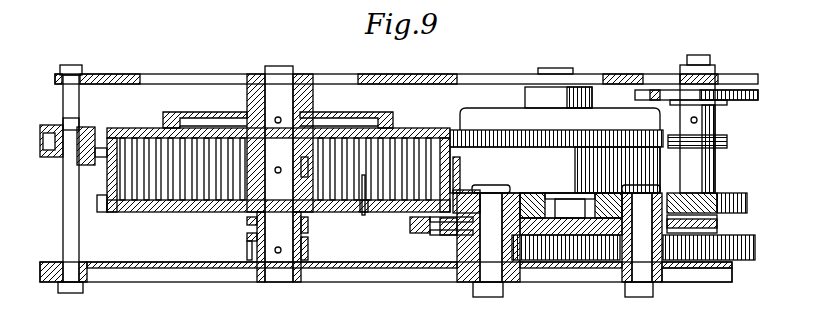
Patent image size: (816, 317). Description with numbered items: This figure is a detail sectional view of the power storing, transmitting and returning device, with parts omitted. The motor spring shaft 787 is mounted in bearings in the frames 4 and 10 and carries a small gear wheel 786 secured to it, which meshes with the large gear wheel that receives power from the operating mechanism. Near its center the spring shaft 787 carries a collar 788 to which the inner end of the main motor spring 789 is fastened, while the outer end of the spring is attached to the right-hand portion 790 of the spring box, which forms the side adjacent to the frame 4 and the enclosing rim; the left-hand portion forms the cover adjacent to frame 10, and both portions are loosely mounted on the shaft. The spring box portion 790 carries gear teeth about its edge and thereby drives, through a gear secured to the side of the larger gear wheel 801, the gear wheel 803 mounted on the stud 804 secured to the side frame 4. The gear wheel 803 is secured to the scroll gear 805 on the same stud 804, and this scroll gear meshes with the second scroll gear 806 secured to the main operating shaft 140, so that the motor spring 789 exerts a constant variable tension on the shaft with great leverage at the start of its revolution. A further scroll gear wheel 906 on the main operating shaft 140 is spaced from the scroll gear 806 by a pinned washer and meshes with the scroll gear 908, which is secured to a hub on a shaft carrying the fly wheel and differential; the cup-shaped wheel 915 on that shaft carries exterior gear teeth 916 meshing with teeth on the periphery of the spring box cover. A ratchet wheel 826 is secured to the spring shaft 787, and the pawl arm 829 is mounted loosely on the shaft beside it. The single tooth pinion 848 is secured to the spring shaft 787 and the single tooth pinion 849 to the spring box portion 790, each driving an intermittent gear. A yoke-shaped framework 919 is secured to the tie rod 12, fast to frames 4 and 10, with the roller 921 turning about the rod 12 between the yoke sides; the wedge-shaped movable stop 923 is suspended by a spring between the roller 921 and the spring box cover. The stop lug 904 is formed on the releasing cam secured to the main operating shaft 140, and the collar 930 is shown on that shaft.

The frame 4 is at (410, 268).
The frame 10 is at (430, 84).
The tie rod 12 is at (64, 231).
The main operating shaft 140 is at (714, 174).
The small gear wheel 786 is at (308, 245).
The motor spring shaft 787 is at (283, 278).
The collar 788 is at (308, 182).
The motor spring 789 is at (364, 215).
The right-hand portion of spring box 790 is at (366, 205).
The larger gear wheel 801 is at (414, 236).
The gear wheel 803 is at (707, 229).
The stud 804 is at (640, 276).
The scroll gear 805 is at (700, 201).
The scroll gear 806 is at (713, 219).
The ratchet wheel 826 is at (200, 120).
The pawl arm 829 is at (303, 113).
The single tooth pinion 848 is at (247, 237).
The single tooth pinion 849 is at (247, 224).
The stop lug 904 is at (660, 95).
The scroll gear wheel 906 is at (728, 266).
The scroll gear 908 is at (518, 258).
The cup-shaped wheel 915 is at (560, 119).
The exterior gear teeth 916 is at (520, 138).
The yoke-shaped framework 919 is at (63, 124).
The roller 921 is at (46, 131).
The wedge-shaped movable stop 923 is at (92, 130).
The collar 930 is at (728, 141).